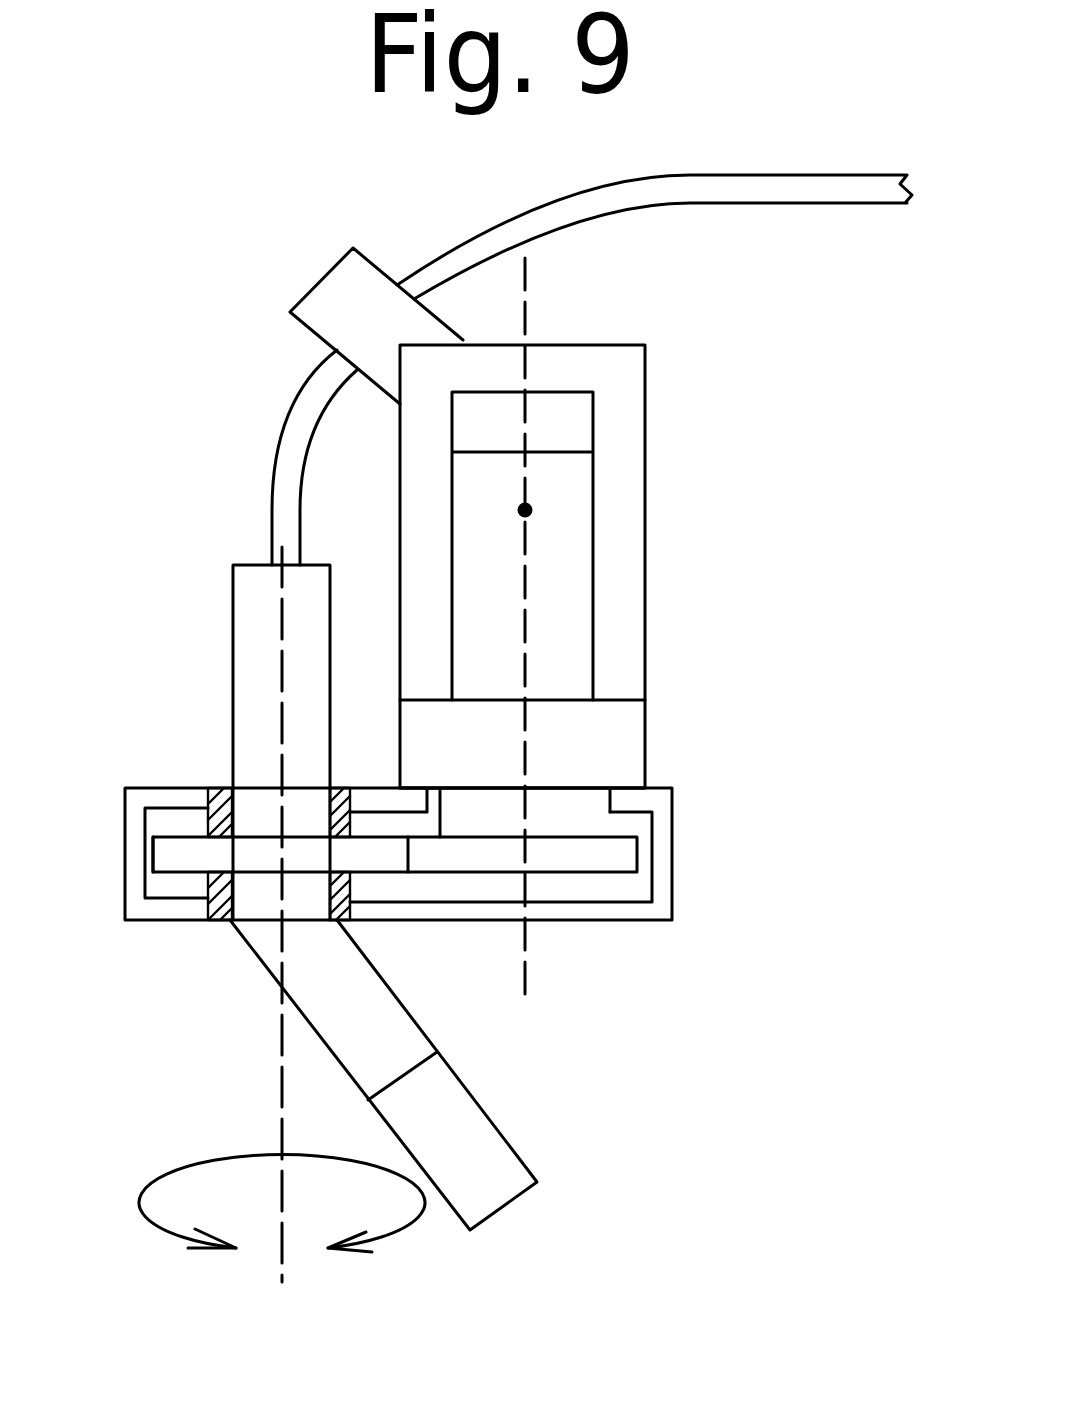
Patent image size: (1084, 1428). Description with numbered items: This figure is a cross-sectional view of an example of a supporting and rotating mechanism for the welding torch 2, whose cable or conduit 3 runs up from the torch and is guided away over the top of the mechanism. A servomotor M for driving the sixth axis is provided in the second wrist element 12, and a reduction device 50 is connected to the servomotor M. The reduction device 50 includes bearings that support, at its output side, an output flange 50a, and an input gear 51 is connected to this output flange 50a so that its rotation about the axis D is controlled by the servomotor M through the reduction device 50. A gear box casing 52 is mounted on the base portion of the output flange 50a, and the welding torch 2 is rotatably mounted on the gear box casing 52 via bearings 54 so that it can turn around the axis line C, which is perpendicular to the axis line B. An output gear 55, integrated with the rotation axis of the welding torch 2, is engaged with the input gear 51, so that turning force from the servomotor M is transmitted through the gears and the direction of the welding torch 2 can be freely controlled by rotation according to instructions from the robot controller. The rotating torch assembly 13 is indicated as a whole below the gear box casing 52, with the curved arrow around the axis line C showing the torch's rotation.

The welding torch 2 is at (233, 632).
The curved tube / hose 3 is at (272, 465).
The second wrist element 12 is at (627, 622).
The rotating arm unit 13 is at (640, 1050).
The reduction device 50 is at (615, 738).
The output flange 50a is at (565, 800).
The input gear 51 is at (613, 858).
The gear box casing 52 is at (605, 922).
The bearings 54 is at (197, 787).
The output gear 55 is at (180, 853).
The servomotor M is at (567, 512).
The axis line B is at (506, 535).
The axis line C is at (282, 946).
The axis D is at (526, 663).